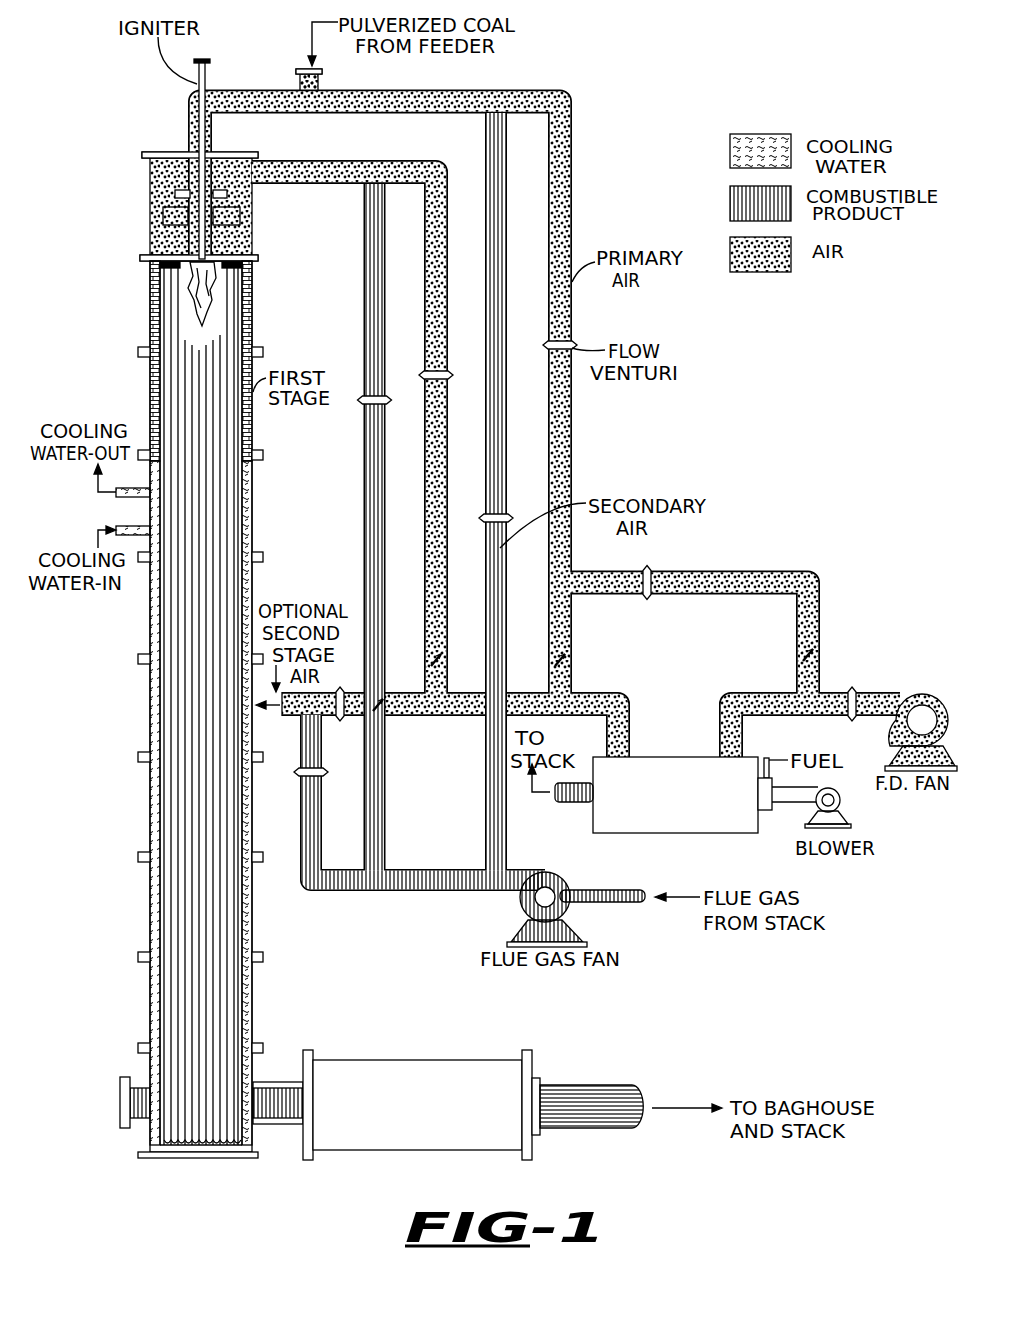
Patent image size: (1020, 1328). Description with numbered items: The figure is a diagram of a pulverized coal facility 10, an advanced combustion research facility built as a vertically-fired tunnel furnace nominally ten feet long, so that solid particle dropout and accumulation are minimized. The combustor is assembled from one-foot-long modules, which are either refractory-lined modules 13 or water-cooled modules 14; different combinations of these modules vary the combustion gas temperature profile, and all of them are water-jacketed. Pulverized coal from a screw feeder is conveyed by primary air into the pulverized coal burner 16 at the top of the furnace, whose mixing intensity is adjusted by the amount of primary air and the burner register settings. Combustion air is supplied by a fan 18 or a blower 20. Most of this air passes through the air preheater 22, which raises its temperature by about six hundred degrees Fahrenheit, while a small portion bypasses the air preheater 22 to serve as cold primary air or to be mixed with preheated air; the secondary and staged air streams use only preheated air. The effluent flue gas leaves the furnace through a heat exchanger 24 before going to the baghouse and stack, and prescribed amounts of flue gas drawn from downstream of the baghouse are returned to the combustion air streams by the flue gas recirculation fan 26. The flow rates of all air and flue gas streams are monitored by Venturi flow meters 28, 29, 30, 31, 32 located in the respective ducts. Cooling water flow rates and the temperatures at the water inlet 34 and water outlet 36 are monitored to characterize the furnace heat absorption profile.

The pulverized coal facility 10 is at (154, 1186).
The refractory-lined module 13 is at (149, 320).
The water-cooled module 14 is at (253, 499).
The pulverized coal burner 16 is at (148, 212).
The fan 18 is at (945, 702).
The blower 20 is at (843, 805).
The air preheater 22 is at (670, 757).
The heat exchanger 24 is at (418, 1060).
The flue gas recirculation fan 26 is at (518, 906).
The Venturi flow meter 28 is at (568, 345).
The Venturi flow meter 29 is at (503, 512).
The Venturi flow meter 30 is at (450, 380).
The Venturi flow meter 31 is at (386, 401).
The Venturi flow meter 32 is at (323, 774).
The water inlet 34 is at (116, 530).
The water outlet 36 is at (116, 494).